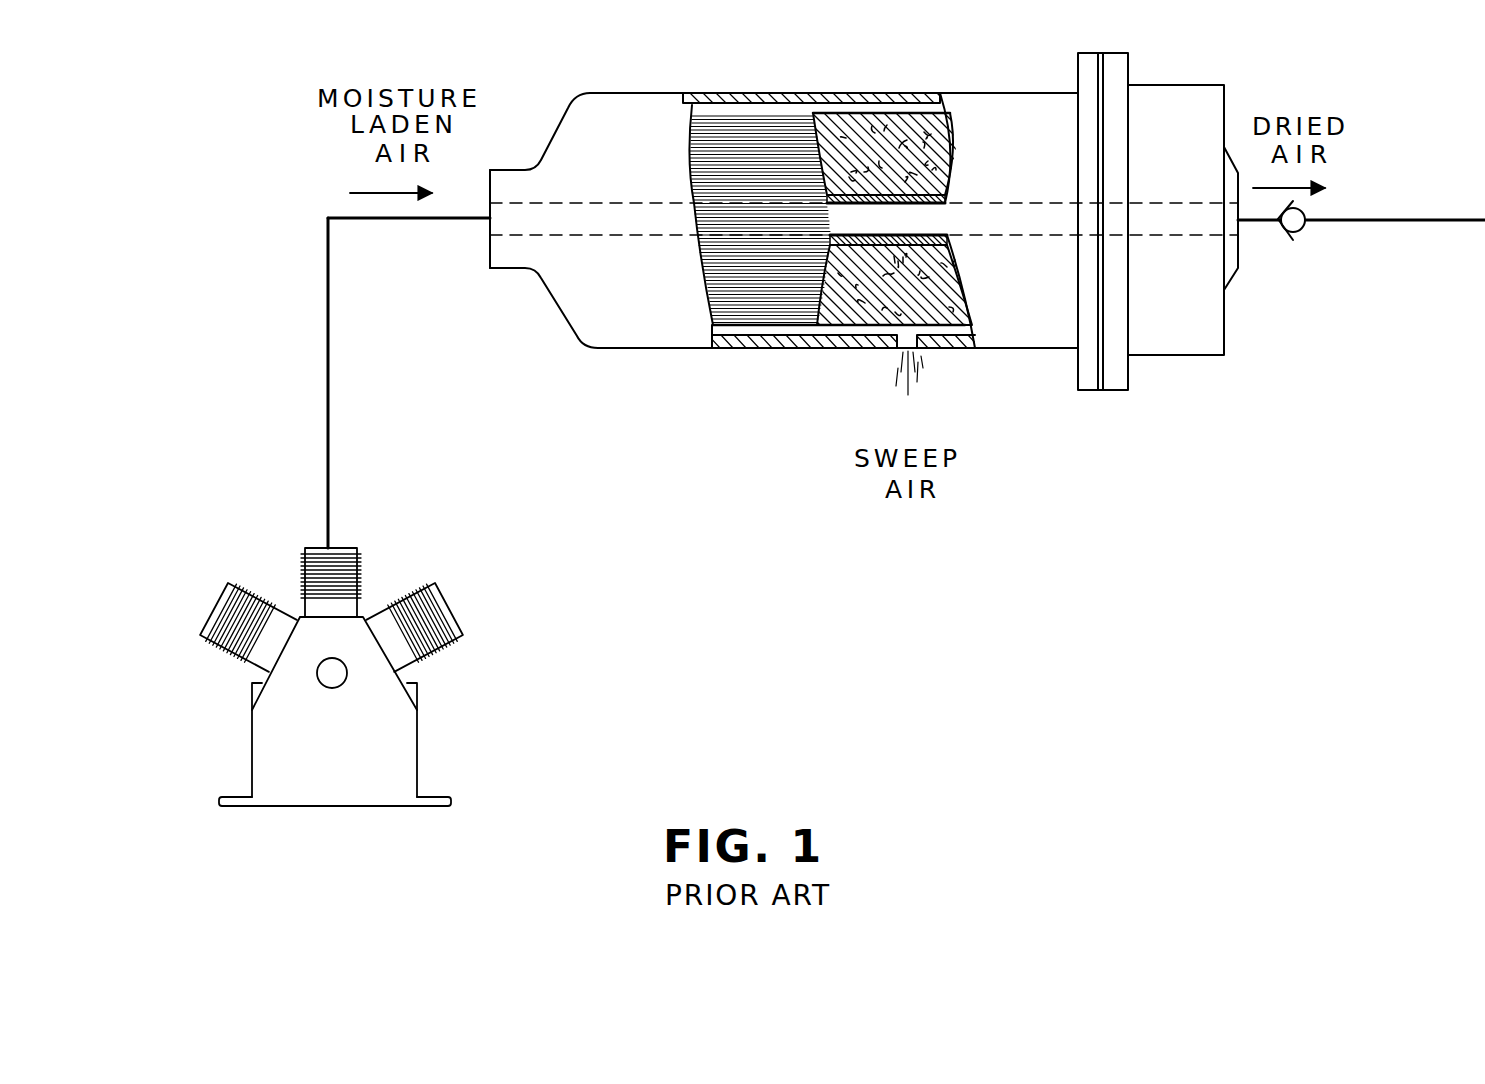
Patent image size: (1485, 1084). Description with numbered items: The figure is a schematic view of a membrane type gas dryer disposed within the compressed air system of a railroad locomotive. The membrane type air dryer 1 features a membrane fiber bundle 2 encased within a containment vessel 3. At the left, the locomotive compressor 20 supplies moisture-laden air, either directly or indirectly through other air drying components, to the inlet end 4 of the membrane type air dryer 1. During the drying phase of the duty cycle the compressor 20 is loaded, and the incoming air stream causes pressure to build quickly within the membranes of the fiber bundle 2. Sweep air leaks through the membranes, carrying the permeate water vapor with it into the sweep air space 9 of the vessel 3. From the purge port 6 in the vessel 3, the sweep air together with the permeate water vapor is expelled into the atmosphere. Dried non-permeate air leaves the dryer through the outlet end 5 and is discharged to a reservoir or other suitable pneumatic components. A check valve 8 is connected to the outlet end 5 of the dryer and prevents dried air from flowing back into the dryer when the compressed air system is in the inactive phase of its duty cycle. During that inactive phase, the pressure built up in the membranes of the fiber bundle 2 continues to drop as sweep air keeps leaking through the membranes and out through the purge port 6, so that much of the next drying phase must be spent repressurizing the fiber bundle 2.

The membrane type air dryer 1 is at (566, 356).
The membrane fiber bundle 2 is at (757, 135).
The containment vessel 3 is at (827, 93).
The inlet end 4 is at (490, 245).
The outlet end 5 is at (1241, 234).
The purge port 6 is at (901, 352).
The check valve 8 is at (1300, 235).
The sweep air space 9 is at (917, 105).
The locomotive compressor 20 is at (358, 752).